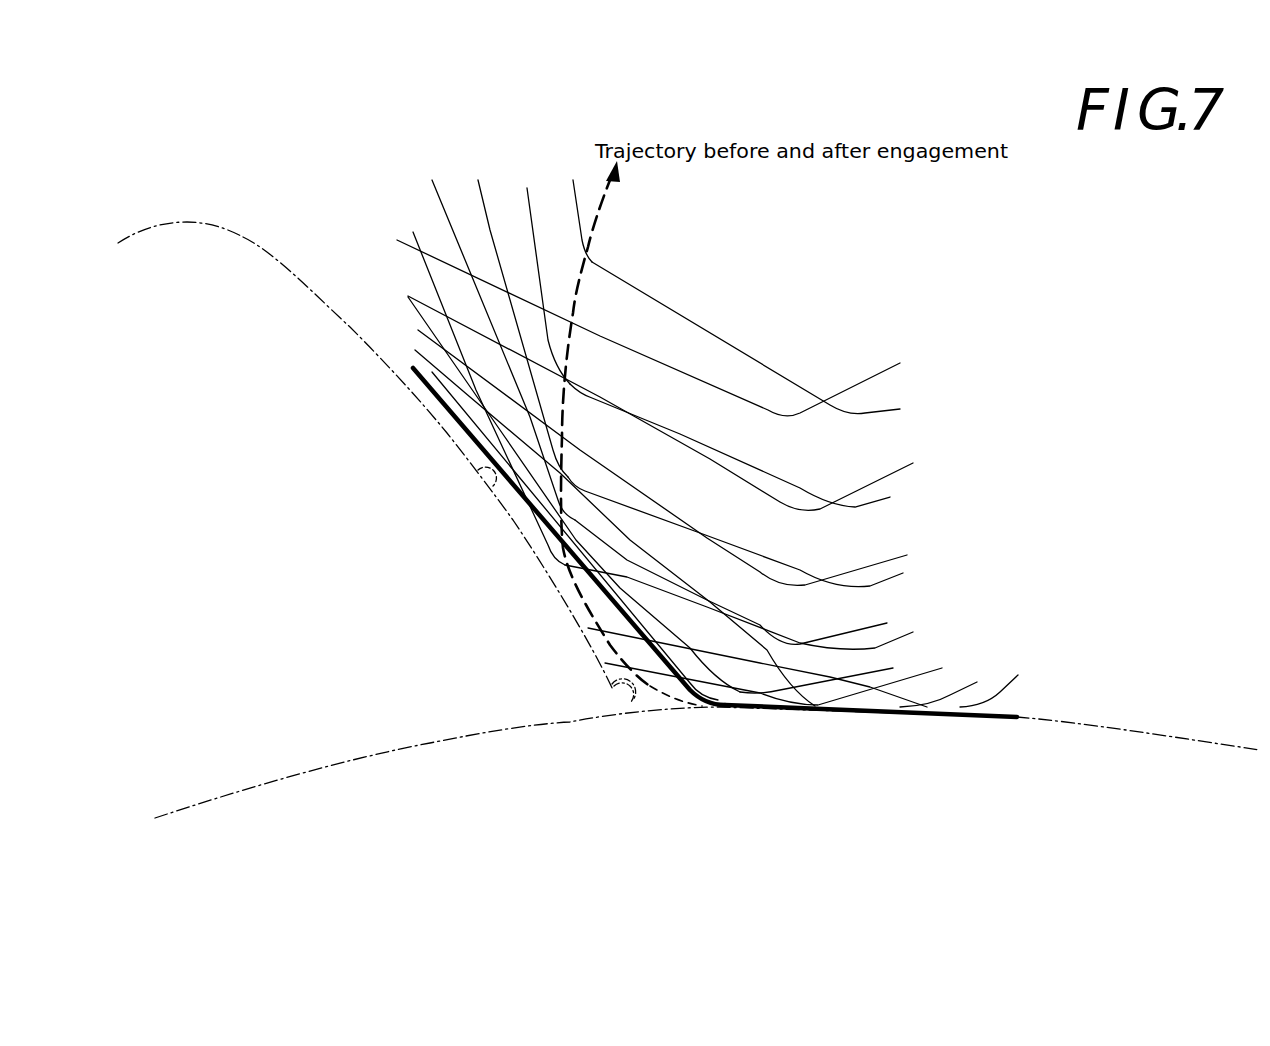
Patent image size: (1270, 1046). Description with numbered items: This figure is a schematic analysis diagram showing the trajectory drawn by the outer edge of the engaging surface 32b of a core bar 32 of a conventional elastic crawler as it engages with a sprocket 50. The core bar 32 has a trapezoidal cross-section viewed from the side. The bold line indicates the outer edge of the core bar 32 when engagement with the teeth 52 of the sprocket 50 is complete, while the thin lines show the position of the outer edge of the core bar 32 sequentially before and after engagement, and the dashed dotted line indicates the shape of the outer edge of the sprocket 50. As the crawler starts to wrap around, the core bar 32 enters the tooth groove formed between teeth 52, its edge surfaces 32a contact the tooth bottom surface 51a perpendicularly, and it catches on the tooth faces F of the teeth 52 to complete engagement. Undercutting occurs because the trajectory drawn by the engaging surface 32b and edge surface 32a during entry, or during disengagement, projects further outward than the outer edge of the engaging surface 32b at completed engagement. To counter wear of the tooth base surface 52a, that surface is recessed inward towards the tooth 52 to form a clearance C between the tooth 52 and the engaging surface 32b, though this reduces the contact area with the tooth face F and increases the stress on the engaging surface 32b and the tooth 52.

The core bar 32 is at (870, 424).
The edge surface 32a is at (690, 343).
The engaging surface 32b is at (573, 202).
The sprocket 50 is at (177, 197).
The tooth bottom surface 51a is at (1057, 718).
The tooth 52 is at (238, 272).
The tooth base surface 52a is at (621, 700).
The tooth face F is at (480, 470).
The clearance C is at (611, 672).